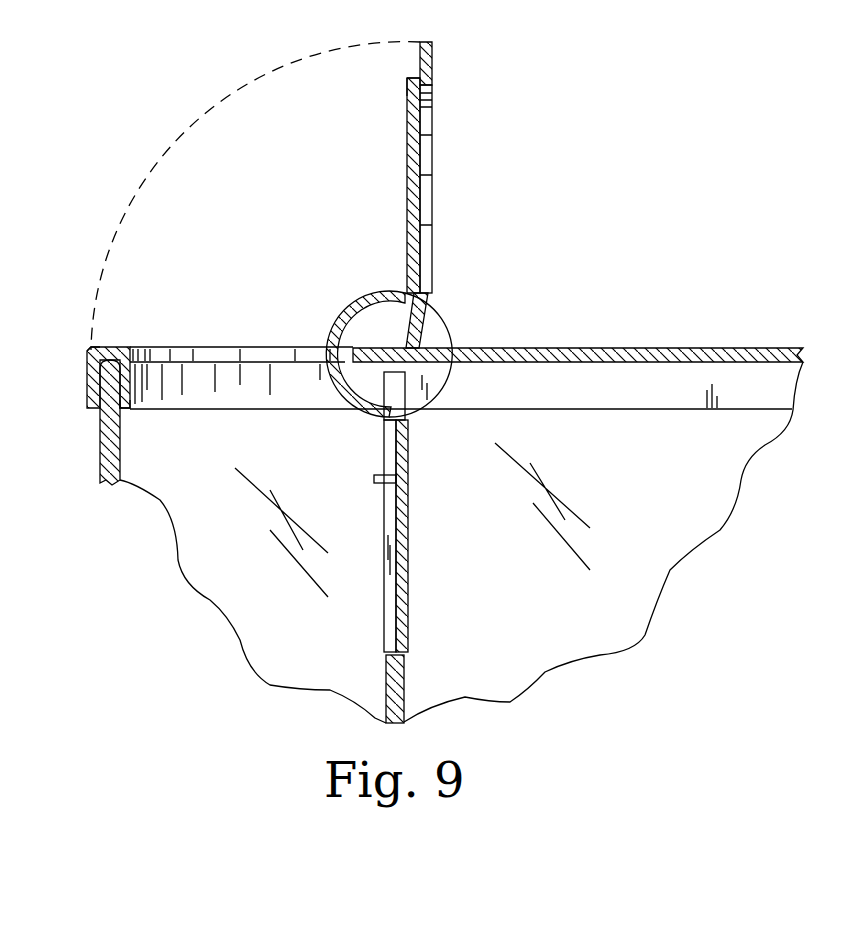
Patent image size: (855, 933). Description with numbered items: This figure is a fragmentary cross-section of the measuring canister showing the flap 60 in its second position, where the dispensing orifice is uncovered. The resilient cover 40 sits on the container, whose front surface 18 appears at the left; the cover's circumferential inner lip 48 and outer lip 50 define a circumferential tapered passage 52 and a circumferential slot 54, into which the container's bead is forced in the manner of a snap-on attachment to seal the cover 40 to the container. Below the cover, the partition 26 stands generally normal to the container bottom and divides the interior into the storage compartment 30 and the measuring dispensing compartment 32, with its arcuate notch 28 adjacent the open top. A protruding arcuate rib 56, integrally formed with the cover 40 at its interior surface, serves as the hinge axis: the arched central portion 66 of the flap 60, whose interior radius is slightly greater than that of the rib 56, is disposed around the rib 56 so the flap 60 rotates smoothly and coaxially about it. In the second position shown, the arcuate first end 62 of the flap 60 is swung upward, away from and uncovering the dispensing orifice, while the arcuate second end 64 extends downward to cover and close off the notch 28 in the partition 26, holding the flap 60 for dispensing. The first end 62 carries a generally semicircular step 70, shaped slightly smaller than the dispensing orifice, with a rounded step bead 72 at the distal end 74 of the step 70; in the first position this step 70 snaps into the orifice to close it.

The front surface 18 is at (103, 470).
The partition 26 is at (388, 710).
The arcuate notch 28 is at (387, 633).
The storage compartment 30 is at (657, 560).
The measuring dispensing compartment 32 is at (228, 592).
The resilient cover 40 is at (716, 349).
The circumferential inner lip 48 is at (123, 411).
The outer lip 50 is at (90, 378).
The circumferential tapered passage 52 is at (100, 400).
The circumferential slot 54 is at (97, 352).
The protruding arcuate rib 56 is at (445, 372).
The flap 60 is at (426, 300).
The arcuate first end 62 is at (434, 78).
The arcuate second end 64 is at (407, 618).
The arched central portion 66 is at (362, 312).
The semicircular step 70 is at (411, 160).
The rounded step bead 72 is at (407, 93).
The distal end 74 is at (411, 80).